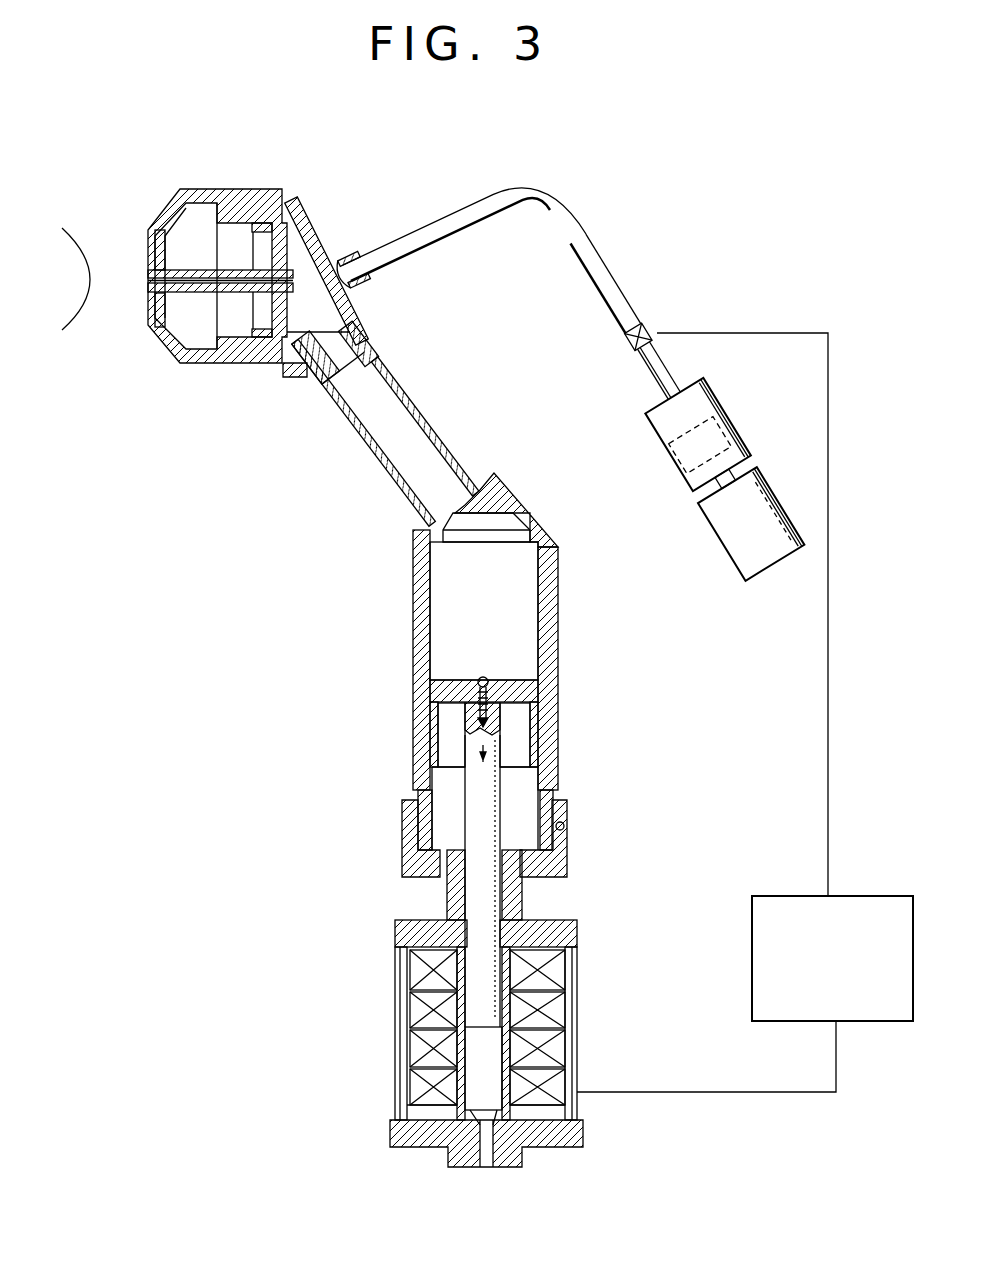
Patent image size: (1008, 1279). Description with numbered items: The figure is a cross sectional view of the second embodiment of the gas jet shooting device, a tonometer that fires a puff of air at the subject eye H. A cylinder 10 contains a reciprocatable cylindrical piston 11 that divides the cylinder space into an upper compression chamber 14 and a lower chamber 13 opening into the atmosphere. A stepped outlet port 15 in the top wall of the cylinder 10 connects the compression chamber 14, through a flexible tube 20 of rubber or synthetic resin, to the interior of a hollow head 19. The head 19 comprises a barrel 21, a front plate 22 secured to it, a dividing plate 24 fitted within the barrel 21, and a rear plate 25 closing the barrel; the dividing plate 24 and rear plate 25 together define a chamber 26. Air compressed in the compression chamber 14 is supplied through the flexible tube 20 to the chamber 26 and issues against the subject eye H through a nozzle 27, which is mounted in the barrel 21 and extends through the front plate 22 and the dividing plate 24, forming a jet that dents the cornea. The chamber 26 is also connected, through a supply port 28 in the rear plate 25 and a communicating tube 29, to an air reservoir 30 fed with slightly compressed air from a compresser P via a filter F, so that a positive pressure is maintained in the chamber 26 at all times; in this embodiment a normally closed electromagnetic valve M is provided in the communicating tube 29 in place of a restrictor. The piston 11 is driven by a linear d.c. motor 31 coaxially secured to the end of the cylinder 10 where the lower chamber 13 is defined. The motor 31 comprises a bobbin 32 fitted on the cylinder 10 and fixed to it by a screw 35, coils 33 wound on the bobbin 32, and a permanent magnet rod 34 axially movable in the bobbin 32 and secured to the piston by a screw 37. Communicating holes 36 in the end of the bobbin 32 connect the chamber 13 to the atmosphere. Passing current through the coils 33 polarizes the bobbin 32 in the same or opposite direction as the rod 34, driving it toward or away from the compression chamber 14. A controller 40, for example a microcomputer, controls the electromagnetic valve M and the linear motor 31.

The cylinder 10 is at (560, 619).
The piston 11 is at (532, 692).
The lower chamber 13 is at (525, 785).
The compression chamber 14 is at (440, 636).
The stepped outlet port 15 is at (490, 547).
The head 19 is at (337, 250).
The flexible tube 20 is at (380, 468).
The barrel 21 is at (240, 190).
The front plate 22 is at (175, 232).
The dividing plate 24 is at (300, 240).
The rear plate 25 is at (368, 322).
The chamber 26 is at (320, 352).
The nozzle 27 is at (175, 270).
The supply port 28 is at (345, 300).
The communicating tube 29 is at (605, 230).
The air reservoir 30 is at (735, 405).
The linear d.c. motor 31 is at (582, 960).
The bobbin 32 is at (400, 830).
The coils 33 is at (557, 972).
The permanent magnet rod 34 is at (470, 975).
The screw 35 is at (565, 826).
The communicating holes 36 is at (447, 878).
The screw 37 is at (483, 678).
The controller 40 is at (788, 1024).
The subject eye H is at (78, 325).
The electromagnetic valve M is at (635, 345).
The filter F is at (740, 445).
The compresser P is at (762, 486).